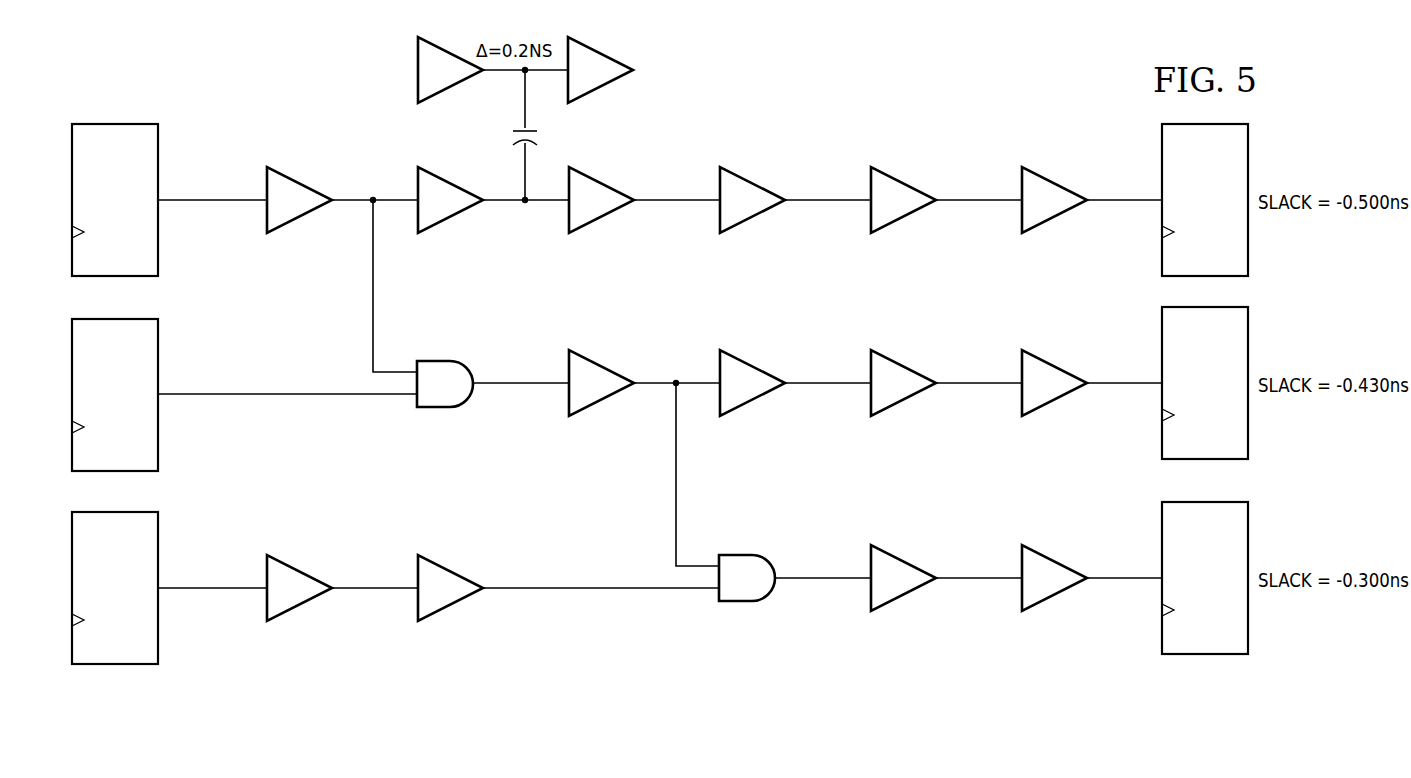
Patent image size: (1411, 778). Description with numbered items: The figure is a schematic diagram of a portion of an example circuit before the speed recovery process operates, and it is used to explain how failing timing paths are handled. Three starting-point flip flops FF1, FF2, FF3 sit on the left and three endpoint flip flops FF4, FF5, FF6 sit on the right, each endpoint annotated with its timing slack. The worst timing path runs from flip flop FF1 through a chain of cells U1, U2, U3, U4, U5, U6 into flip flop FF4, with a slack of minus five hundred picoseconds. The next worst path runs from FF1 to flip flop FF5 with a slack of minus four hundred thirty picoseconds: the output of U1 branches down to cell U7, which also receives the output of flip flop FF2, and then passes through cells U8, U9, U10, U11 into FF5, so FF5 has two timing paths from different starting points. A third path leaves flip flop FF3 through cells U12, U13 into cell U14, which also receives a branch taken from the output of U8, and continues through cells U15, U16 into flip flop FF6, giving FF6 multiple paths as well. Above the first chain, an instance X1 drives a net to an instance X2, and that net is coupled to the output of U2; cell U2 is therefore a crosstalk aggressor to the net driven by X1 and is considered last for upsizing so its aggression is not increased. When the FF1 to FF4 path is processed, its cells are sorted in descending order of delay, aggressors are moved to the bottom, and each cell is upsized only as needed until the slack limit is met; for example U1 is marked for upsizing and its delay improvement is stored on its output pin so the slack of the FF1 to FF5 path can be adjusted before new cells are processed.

The flip flop FF1 is at (115, 200).
The flip flop FF2 is at (115, 395).
The flip flop FF3 is at (115, 588).
The flip flop FF4 is at (1205, 200).
The flip flop FF5 is at (1205, 383).
The flip flop FF6 is at (1205, 578).
The cell U1 is at (299, 200).
The cell U2 is at (450, 200).
The cell U3 is at (601, 200).
The cell U4 is at (752, 200).
The cell U5 is at (903, 200).
The cell U6 is at (1054, 200).
The cell U7 is at (445, 384).
The cell U8 is at (601, 383).
The cell U9 is at (752, 383).
The cell U10 is at (903, 383).
The cell U11 is at (1054, 383).
The cell U12 is at (299, 588).
The cell U13 is at (450, 588).
The cell U14 is at (747, 578).
The cell U15 is at (903, 578).
The cell U16 is at (1054, 578).
The instance X1 is at (450, 70).
The instance X2 is at (600, 70).